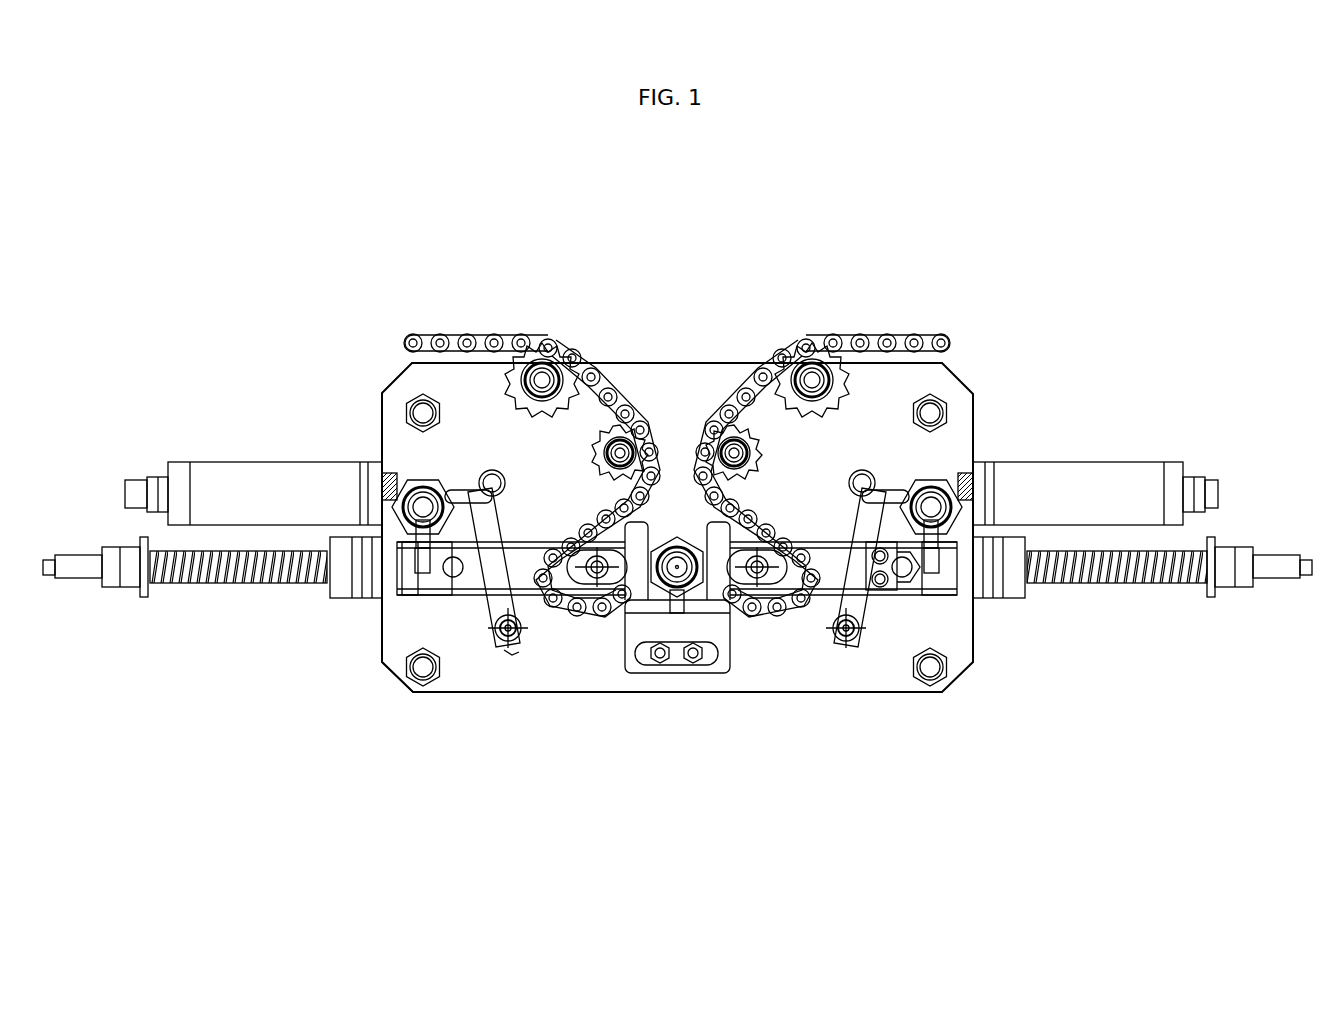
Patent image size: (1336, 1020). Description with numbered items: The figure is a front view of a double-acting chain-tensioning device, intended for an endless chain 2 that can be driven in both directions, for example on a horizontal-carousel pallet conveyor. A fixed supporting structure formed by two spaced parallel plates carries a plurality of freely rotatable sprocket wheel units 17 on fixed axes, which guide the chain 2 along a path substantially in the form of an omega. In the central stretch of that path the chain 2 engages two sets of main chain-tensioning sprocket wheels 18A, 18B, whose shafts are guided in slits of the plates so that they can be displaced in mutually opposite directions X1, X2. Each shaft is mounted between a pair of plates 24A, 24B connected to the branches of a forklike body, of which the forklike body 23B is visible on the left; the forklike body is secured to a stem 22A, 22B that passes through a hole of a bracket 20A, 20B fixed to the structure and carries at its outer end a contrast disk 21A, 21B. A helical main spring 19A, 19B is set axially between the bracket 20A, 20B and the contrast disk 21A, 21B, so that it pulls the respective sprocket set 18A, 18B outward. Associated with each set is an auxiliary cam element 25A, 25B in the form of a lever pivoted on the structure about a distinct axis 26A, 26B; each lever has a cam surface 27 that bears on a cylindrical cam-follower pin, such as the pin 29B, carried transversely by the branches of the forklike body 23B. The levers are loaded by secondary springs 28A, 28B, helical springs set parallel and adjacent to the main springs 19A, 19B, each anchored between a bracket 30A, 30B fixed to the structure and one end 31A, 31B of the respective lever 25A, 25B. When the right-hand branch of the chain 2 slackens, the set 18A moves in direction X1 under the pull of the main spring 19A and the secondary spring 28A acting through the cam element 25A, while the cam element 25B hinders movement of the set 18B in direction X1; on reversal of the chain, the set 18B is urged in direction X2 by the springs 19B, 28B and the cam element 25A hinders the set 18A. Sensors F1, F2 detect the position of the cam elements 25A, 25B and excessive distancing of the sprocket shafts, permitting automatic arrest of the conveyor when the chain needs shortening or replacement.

The chain 2 is at (458, 300).
The sprocket wheel units 17 is at (503, 388).
The set of main chain-tensioning sprocket wheels 18A is at (769, 600).
The set of main chain-tensioning sprocket wheels 18B is at (596, 600).
The main spring 19A is at (1192, 582).
The main spring 19B is at (218, 582).
The bracket 20A is at (1013, 586).
The bracket 20B is at (338, 586).
The contrast disk 21A is at (1250, 595).
The contrast disk 21B is at (144, 597).
The stem 22A is at (966, 598).
The stem 22B is at (396, 532).
The forklike body 23B is at (416, 596).
The plates 24A is at (808, 550).
The plates 24B is at (522, 542).
The auxiliary cam element 25A is at (884, 606).
The auxiliary cam element 25B is at (480, 640).
The axis 26A is at (850, 642).
The axis 26B is at (512, 642).
The cam surface 27 is at (440, 672).
The secondary spring 28A is at (944, 480).
The secondary spring 28B is at (410, 478).
The cylindrical pin 29B is at (447, 578).
The bracket 30A is at (1080, 492).
The bracket 30B is at (240, 482).
The end of lever 31A is at (868, 471).
The end of lever 31B is at (484, 471).
The sensor F1 is at (698, 530).
The sensor F2 is at (421, 470).
The direction X1 is at (1144, 717).
The direction X2 is at (322, 717).